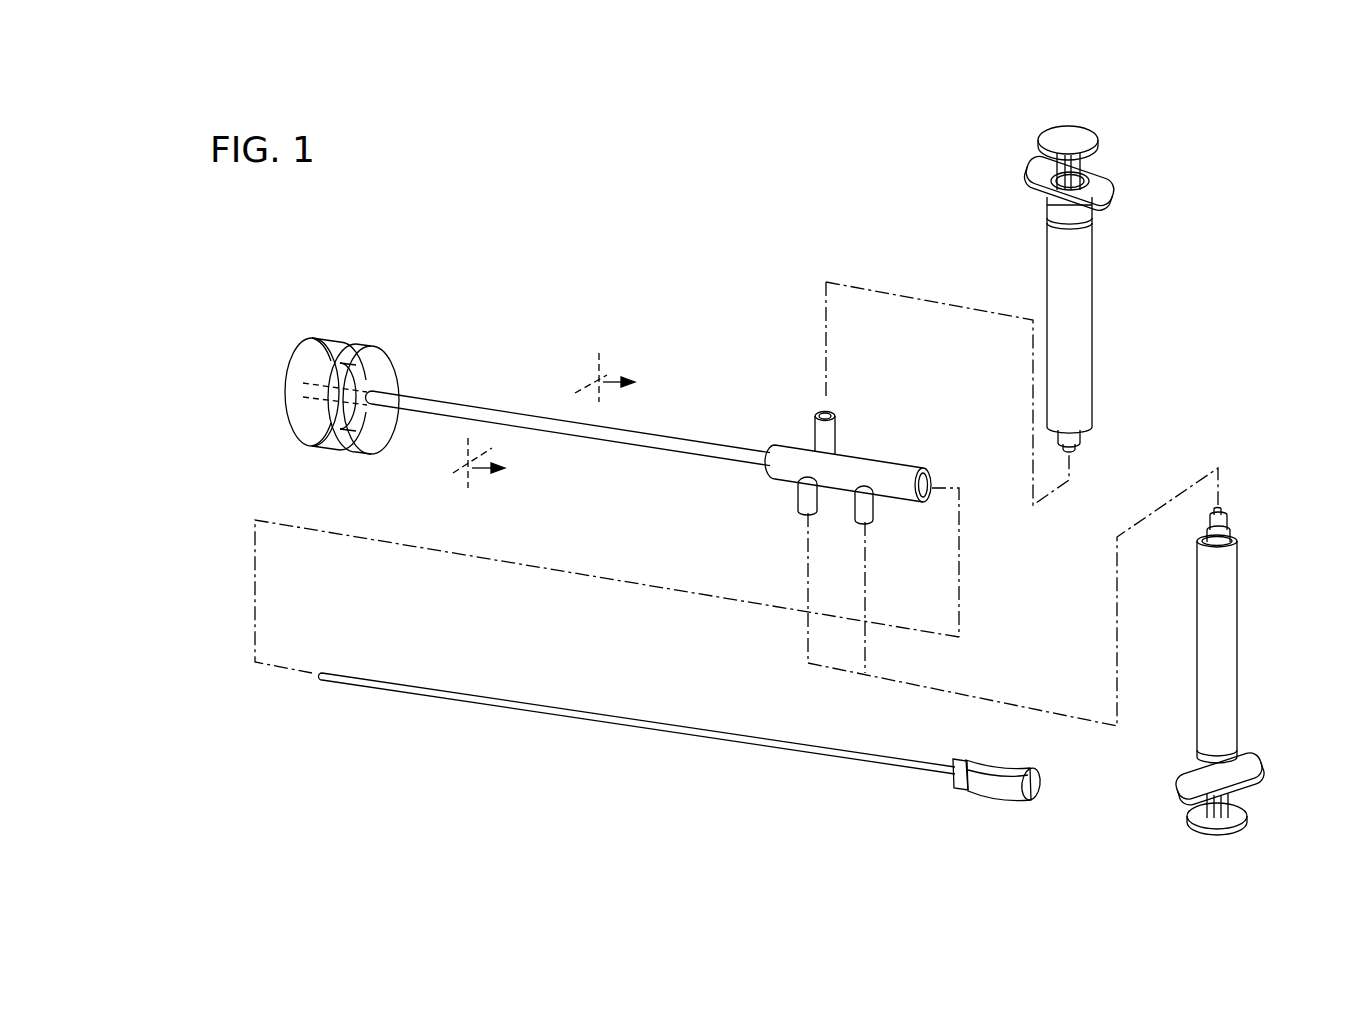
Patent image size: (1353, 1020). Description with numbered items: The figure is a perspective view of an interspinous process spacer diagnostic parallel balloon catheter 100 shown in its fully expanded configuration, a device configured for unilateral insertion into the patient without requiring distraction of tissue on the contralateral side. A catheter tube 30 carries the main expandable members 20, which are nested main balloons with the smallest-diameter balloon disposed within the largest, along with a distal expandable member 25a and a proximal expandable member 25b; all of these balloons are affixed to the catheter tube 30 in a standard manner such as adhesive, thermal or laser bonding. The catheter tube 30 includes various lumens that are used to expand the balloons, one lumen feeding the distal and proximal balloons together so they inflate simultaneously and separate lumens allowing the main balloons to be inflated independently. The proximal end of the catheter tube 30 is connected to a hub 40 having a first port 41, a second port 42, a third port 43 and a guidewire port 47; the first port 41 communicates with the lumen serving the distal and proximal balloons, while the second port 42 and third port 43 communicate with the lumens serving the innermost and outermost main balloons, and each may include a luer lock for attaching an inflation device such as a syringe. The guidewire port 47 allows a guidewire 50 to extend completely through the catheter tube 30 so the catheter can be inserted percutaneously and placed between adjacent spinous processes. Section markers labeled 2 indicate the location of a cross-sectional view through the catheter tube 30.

The interspinous process spacer diagnostic parallel balloon catheter 100 is at (696, 366).
The main expandable members 20 is at (330, 356).
The distal expandable member 25a is at (288, 410).
The proximal expandable member 25b is at (376, 432).
The catheter tube 30 is at (648, 446).
The hub 40 is at (778, 470).
The first port 41 is at (831, 435).
The second port 42 is at (807, 500).
The third port 43 is at (869, 510).
The guidewire port 47 is at (929, 481).
The guidewire 50 is at (610, 719).
The section line for FIG. 2 is at (540, 420).